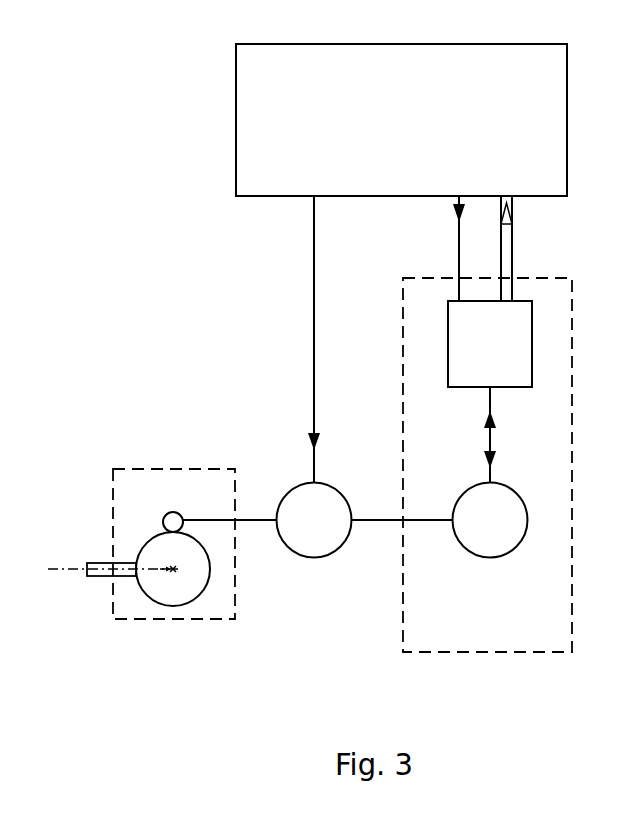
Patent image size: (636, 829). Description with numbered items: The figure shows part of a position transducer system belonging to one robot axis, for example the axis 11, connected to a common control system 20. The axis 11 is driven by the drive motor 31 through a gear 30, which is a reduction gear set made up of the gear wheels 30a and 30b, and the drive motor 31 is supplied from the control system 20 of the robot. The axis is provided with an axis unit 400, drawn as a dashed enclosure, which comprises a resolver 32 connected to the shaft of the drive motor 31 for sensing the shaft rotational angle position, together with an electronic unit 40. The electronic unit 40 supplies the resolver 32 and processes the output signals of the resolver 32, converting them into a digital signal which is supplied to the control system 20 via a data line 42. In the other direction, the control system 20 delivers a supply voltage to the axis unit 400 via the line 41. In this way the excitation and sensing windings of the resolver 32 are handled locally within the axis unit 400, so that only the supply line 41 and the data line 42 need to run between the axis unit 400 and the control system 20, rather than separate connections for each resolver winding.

The axis 11 is at (75, 568).
The control system 20 is at (250, 107).
The gear 30 is at (142, 612).
The gear wheel 30a is at (203, 568).
The gear wheel 30b is at (173, 513).
The drive motor 31 is at (323, 537).
The resolver 32 is at (497, 535).
The electronic unit 40 is at (453, 340).
The line 41 is at (455, 205).
The data line 42 is at (513, 230).
The axis unit 400 is at (470, 642).